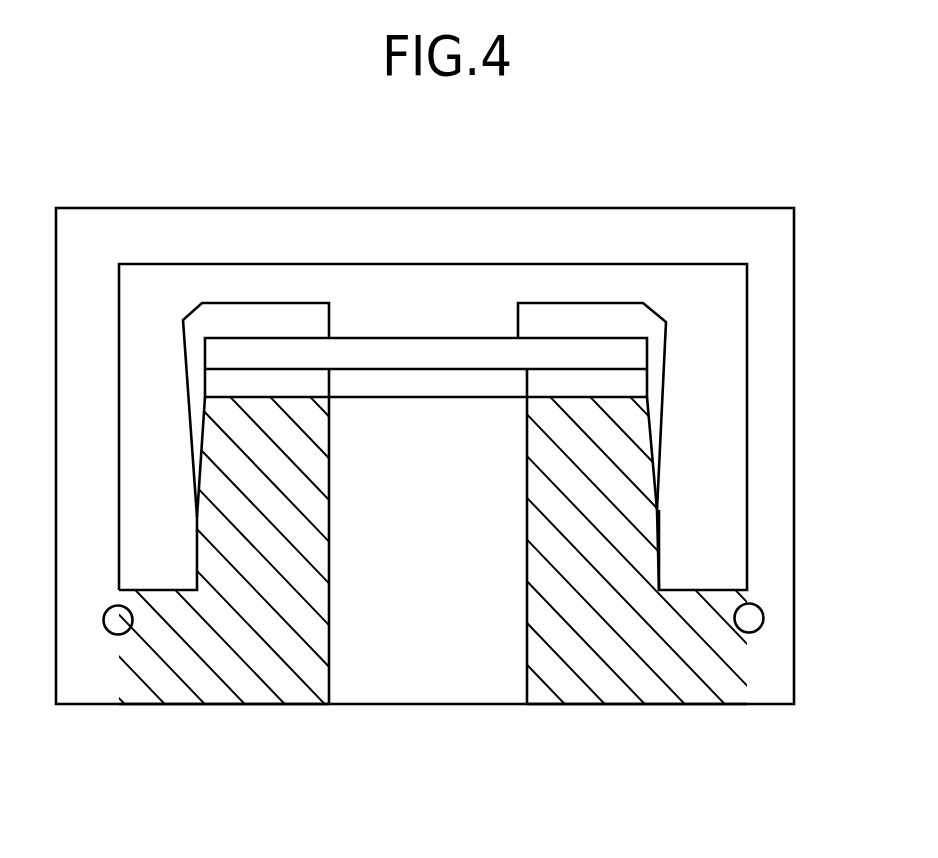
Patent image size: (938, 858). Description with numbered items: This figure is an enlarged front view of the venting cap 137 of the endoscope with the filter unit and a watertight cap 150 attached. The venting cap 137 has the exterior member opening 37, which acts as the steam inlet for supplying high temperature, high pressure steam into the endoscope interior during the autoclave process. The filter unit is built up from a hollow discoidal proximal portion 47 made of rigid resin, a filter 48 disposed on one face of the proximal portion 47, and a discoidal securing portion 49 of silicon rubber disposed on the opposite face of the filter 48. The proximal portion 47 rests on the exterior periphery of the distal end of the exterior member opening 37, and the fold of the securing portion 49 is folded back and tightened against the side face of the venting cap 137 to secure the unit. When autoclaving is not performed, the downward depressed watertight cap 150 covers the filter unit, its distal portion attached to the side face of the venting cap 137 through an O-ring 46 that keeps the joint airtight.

The watertight cap 150 is at (477, 240).
The discoidal securing portion 49 is at (642, 326).
The filter 48 is at (630, 356).
The proximal portion 47 is at (628, 390).
The O-ring 46 is at (115, 623).
The venting cap 137 is at (235, 668).
The exterior member opening 37 is at (419, 606).